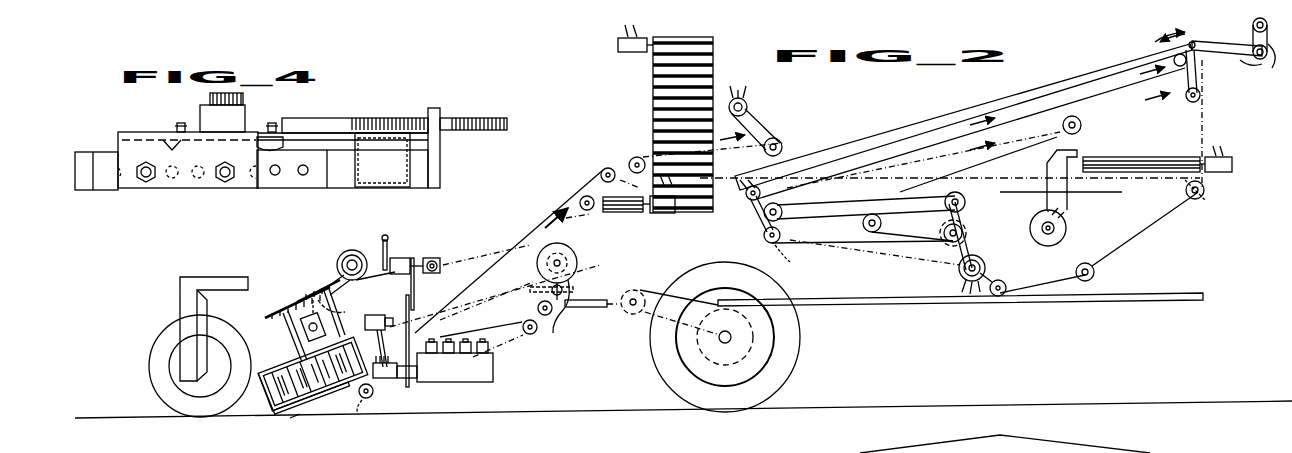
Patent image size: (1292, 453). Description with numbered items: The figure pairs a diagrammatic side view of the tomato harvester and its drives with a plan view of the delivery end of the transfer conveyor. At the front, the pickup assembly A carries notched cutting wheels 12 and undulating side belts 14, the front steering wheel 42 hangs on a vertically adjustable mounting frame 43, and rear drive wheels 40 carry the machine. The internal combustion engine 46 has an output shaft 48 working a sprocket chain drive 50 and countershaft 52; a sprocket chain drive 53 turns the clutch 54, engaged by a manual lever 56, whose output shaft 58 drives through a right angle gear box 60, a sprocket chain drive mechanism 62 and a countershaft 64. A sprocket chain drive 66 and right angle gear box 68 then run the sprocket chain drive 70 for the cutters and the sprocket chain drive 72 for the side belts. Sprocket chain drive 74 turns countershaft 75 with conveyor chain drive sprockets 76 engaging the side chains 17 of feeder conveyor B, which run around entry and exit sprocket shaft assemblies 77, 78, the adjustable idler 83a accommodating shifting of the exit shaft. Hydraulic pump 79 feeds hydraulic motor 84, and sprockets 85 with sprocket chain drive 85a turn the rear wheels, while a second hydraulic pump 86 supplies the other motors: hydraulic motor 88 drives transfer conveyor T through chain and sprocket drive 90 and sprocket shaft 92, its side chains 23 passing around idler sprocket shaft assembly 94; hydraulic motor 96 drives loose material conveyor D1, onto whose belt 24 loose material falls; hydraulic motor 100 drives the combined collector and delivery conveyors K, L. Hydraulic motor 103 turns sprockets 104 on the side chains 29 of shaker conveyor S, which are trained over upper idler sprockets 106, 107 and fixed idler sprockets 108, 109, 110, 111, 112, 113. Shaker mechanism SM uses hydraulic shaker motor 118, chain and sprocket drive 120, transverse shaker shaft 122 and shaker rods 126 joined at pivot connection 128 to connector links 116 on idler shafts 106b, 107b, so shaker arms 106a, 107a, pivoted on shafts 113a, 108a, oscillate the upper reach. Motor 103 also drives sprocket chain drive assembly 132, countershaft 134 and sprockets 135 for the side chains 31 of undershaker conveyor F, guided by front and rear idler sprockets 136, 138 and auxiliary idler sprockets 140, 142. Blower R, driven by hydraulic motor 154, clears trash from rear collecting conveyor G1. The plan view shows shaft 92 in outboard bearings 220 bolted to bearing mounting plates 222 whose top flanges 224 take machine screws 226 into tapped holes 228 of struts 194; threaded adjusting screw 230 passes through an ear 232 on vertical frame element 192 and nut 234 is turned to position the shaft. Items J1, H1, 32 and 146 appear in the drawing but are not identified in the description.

In FIG. 4, the bearing mounting plate 222 is at (118, 132).
In FIG. 4, the outboard bearing 220 is at (245, 112).
In FIG. 4, the sprocket shaft 92 is at (210, 97).
In FIG. 2, the sprocket shaft 92 is at (783, 145).
In FIG. 4, the machine screw 226 is at (146, 184).
In FIG. 4, the top flange 224 is at (186, 180).
In FIG. 4, the tapped hole 228 is at (116, 180).
In FIG. 4, the strut 194 is at (318, 185).
In FIG. 4, the vertical frame element 192 is at (405, 186).
In FIG. 4, the threaded adjusting screw 230 is at (340, 118).
In FIG. 4, the ear 232 is at (440, 110).
In FIG. 4, the nut 234 is at (448, 132).
In FIG. 2, the front steering wheel 42 is at (170, 340).
In FIG. 2, the mounting frame 43 is at (180, 283).
In FIG. 2, the cutting wheel 12 is at (315, 406).
In FIG. 2, the side belt 14 is at (268, 402).
In FIG. 2, the pickup assembly A is at (296, 416).
In FIG. 2, the sprocket chain drive 70 is at (275, 317).
In FIG. 2, the sprocket chain drive 72 is at (317, 292).
In FIG. 2, the right angle gear box 68 is at (303, 332).
In FIG. 2, the countershaft 64 is at (345, 258).
In FIG. 2, the sprocket chain drive mechanism 62 is at (362, 256).
In FIG. 2, the sprocket chain drive 66 is at (336, 286).
In FIG. 2, the manual lever 56 is at (388, 260).
In FIG. 2, the clutch 54 is at (404, 258).
In FIG. 2, the output shaft 58 is at (436, 258).
In FIG. 2, the right angle gear box 60 is at (441, 265).
In FIG. 2, the sprocket chain drive 53 is at (416, 288).
In FIG. 2, the countershaft 52 is at (406, 300).
In FIG. 2, the hydraulic motor 84 is at (394, 322).
In FIG. 2, the second hydraulic pump 86 is at (380, 380).
In FIG. 2, the hydraulic pump 79 is at (390, 380).
In FIG. 2, the entry sprocket shaft assembly 77 is at (360, 416).
In FIG. 2, the output shaft 48 is at (415, 380).
In FIG. 2, the internal combustion engine 46 is at (487, 370).
In FIG. 2, the sprocket chain drive 50 is at (435, 341).
In FIG. 2, the feeder conveyor B is at (585, 178).
In FIG. 2, the sprocket chain drive 74 is at (525, 296).
In FIG. 2, the countershaft 75 is at (562, 262).
In FIG. 2, the conveyor chain drive sprocket 76 is at (570, 290).
In FIG. 2, the adjustable idler 83a is at (565, 317).
In FIG. 2, the sprocket 85 is at (642, 314).
In FIG. 2, the sprocket chain drive 85a is at (665, 338).
In FIG. 2, the rear drive wheel 40 is at (796, 348).
In FIG. 2, the bar J1 is at (1126, 306).
In FIG. 2, the tomato delivery conveyor L is at (650, 66).
In FIG. 2, the hydraulic motor 100 is at (618, 46).
In FIG. 2, the transfer conveyor T is at (648, 158).
In FIG. 2, the idler sprocket shaft assembly 94 is at (630, 164).
In FIG. 2, the exit sprocket shaft assembly 78 is at (602, 170).
In FIG. 2, the side chain 23 is at (630, 188).
In FIG. 2, the side chain 17 is at (580, 219).
In FIG. 2, the belt 24 is at (612, 214).
In FIG. 2, the hydraulic motor 96 is at (664, 215).
In FIG. 2, the loose material conveyor D1 is at (638, 214).
In FIG. 2, the collector conveyor K is at (692, 216).
In FIG. 2, the hydraulic motor 88 is at (747, 100).
In FIG. 2, the chain and sprocket drive 90 is at (765, 125).
In FIG. 2, the connector link 116 is at (917, 124).
In FIG. 2, the side chain 29 is at (878, 144).
In FIG. 2, the upper idler sprocket 106 is at (761, 191).
In FIG. 2, the upper chain idler shaft 106b is at (751, 206).
In FIG. 2, the shaker arm 106a is at (760, 226).
In FIG. 2, the shaft 113a is at (765, 240).
In FIG. 2, the front idler sprocket 136 is at (783, 211).
In FIG. 2, the idler sprocket 113 is at (783, 228).
In FIG. 2, the side chain 31 is at (848, 218).
In FIG. 2, the idler sprocket 112 is at (784, 255).
In FIG. 2, the auxiliary idler sprocket 140 is at (878, 235).
In FIG. 2, the sprocket 135 is at (953, 224).
In FIG. 2, the auxiliary idler sprocket 142 is at (966, 204).
In FIG. 2, the countershaft 134 is at (963, 230).
In FIG. 2, the sprocket chain drive assembly 132 is at (966, 240).
In FIG. 2, the sprocket 104 is at (958, 268).
In FIG. 2, the hydraulic motor 103 is at (953, 284).
In FIG. 2, the idler sprocket 111 is at (1005, 282).
In FIG. 2, the blower R is at (1043, 247).
In FIG. 2, the hydraulic motor 154 is at (1068, 228).
In FIG. 2, the idler sprocket 110 is at (1094, 268).
In FIG. 2, the idler sprocket 109 is at (1186, 194).
In FIG. 2, the direction H1 is at (1122, 194).
In FIG. 2, the rear collecting conveyor G1 is at (1110, 158).
In FIG. 2, the undershaker conveyor F is at (1068, 138).
In FIG. 2, the rear idler sprocket 138 is at (1074, 116).
In FIG. 2, the shaker conveyor S is at (1068, 92).
In FIG. 2, the cylinder 32 is at (1155, 157).
In FIG. 2, the motor 146 is at (1228, 157).
In FIG. 2, the pivot connection 128 is at (1185, 50).
In FIG. 2, the shaker mechanism SM is at (1180, 22).
In FIG. 2, the chain and sprocket drive 120 is at (1250, 40).
In FIG. 2, the hydraulic shaker motor 118 is at (1253, 22).
In FIG. 2, the transverse shaker shaft 122 is at (1258, 53).
In FIG. 2, the shaker rod 126 is at (1262, 72).
In FIG. 2, the upper idler sprocket 107 is at (1197, 75).
In FIG. 2, the upper chain idler shaft 107b is at (1185, 66).
In FIG. 2, the shaker arm 107a is at (1186, 92).
In FIG. 2, the idler sprocket 108 is at (1193, 103).
In FIG. 2, the shaft 108a is at (1200, 96).